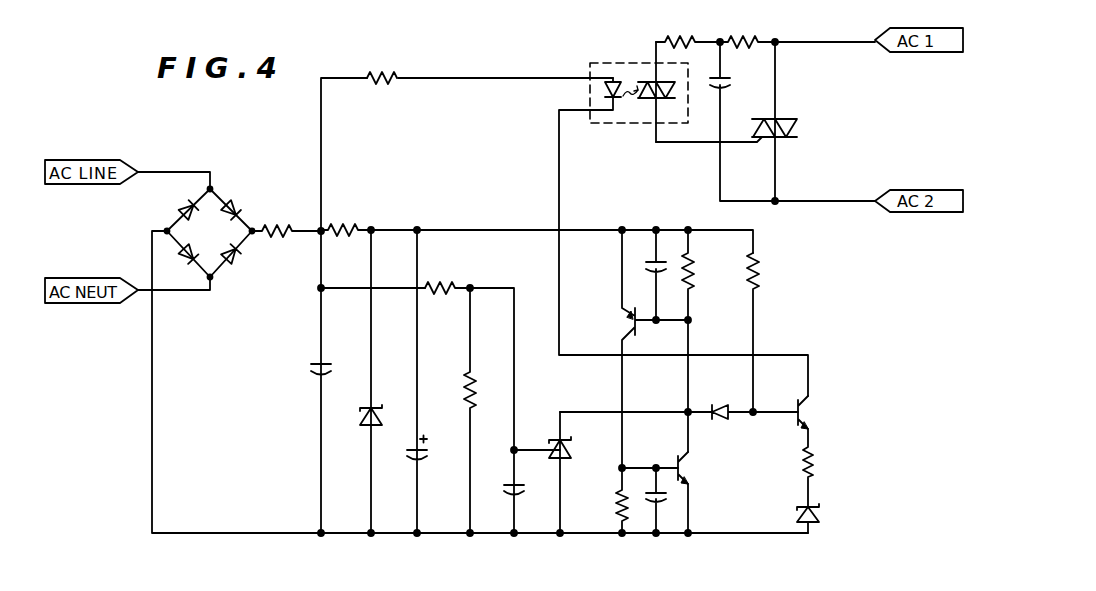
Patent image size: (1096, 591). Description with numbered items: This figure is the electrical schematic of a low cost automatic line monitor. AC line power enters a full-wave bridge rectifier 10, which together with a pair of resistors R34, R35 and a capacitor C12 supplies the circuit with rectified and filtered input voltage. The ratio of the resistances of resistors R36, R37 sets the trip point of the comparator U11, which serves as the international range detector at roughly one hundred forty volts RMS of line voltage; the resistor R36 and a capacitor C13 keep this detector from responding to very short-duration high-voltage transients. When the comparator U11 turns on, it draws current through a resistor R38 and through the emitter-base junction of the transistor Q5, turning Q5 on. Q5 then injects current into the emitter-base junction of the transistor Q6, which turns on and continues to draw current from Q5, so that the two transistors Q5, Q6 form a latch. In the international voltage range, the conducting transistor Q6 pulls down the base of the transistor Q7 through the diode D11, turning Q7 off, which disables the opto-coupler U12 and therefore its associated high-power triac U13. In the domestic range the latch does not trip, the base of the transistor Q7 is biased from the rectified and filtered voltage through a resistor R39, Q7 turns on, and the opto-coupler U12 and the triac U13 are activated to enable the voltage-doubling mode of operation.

The full-wave bridge rectifier 10 is at (232, 266).
The resistor R34 is at (286, 219).
The resistor R35 is at (346, 218).
The resistor R36 is at (447, 276).
The resistor R37 is at (489, 410).
The resistor R38 is at (706, 341).
The resistor R39 is at (772, 332).
The capacitor C12 is at (300, 370).
The capacitor C13 is at (518, 468).
The diode D11 is at (741, 397).
The transistor Q5 is at (637, 349).
The transistor Q6 is at (701, 492).
The transistor Q7 is at (821, 464).
The comparator U11 is at (581, 472).
The opto-coupler U12 is at (612, 62).
The high-power triac U13 is at (747, 121).